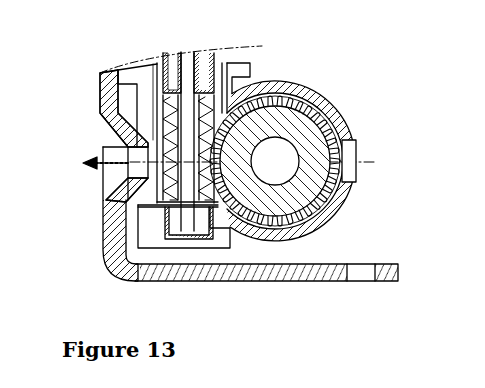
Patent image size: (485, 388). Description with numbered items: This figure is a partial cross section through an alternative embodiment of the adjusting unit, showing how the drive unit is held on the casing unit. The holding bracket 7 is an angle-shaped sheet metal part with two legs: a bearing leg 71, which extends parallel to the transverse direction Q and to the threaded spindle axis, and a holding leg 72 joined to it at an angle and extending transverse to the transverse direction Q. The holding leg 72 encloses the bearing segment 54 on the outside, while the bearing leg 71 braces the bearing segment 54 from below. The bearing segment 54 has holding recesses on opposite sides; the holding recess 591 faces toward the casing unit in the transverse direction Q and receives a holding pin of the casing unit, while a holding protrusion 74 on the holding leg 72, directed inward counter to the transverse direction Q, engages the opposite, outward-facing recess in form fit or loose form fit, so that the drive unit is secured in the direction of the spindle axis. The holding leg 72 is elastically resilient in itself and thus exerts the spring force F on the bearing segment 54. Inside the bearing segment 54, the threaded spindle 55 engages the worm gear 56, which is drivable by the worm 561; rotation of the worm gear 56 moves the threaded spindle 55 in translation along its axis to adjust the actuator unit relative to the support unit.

The holding bracket 7 is at (106, 264).
The bearing leg 71 is at (295, 270).
The holding leg 72 is at (115, 88).
The holding protrusion 74 is at (125, 205).
The worm 561 is at (128, 181).
The bearing segment 54 is at (325, 178).
The threaded spindle 55 is at (252, 160).
The worm gear 56 is at (322, 145).
The holding recess 591 is at (346, 151).
The spring force F is at (152, 137).
The transverse direction Q is at (108, 158).